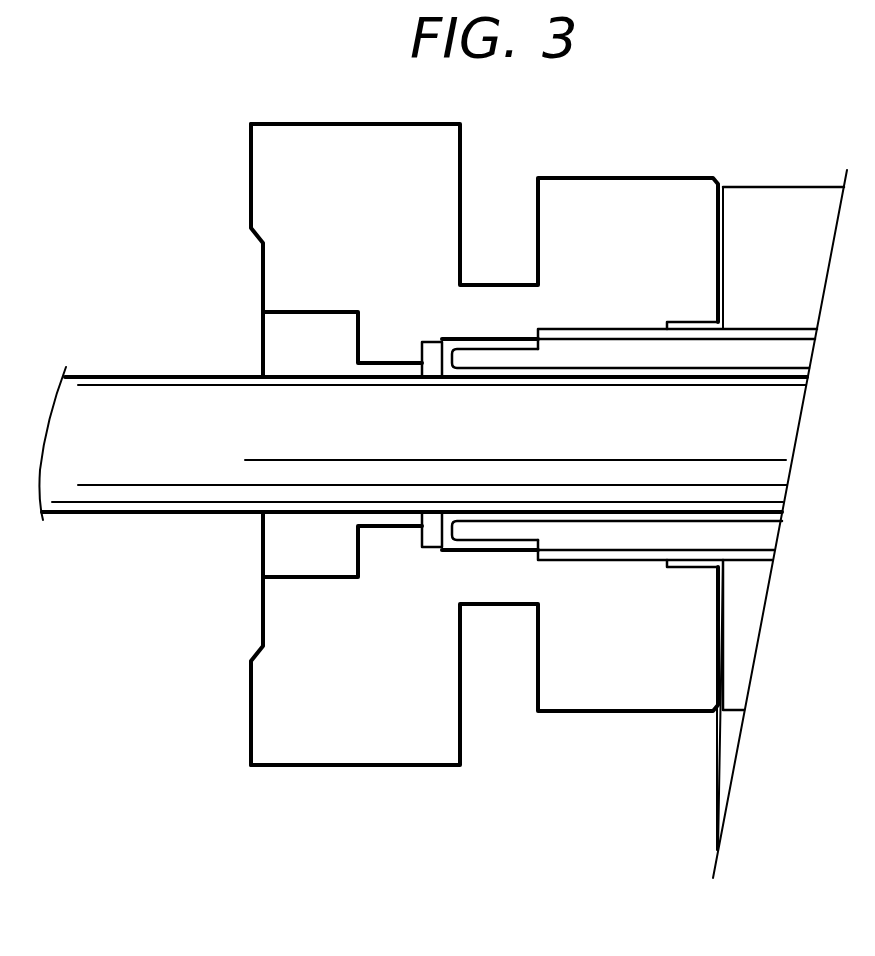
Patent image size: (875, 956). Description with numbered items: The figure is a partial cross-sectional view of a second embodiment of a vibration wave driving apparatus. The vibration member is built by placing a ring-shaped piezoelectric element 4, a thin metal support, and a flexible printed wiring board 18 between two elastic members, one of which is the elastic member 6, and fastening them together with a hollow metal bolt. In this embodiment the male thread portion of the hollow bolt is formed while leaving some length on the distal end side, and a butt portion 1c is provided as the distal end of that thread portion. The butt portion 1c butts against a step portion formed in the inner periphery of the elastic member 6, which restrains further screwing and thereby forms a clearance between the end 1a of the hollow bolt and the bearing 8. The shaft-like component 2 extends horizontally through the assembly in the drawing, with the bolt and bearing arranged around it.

The end of the hollow bolt 1a is at (443, 352).
The butt portion 1c is at (538, 332).
The shaft 2 is at (140, 503).
The piezoelectric element 4 is at (768, 195).
The elastic member 6 is at (313, 757).
The bearing 8 is at (426, 343).
The flexible printed wiring board 18 is at (716, 790).